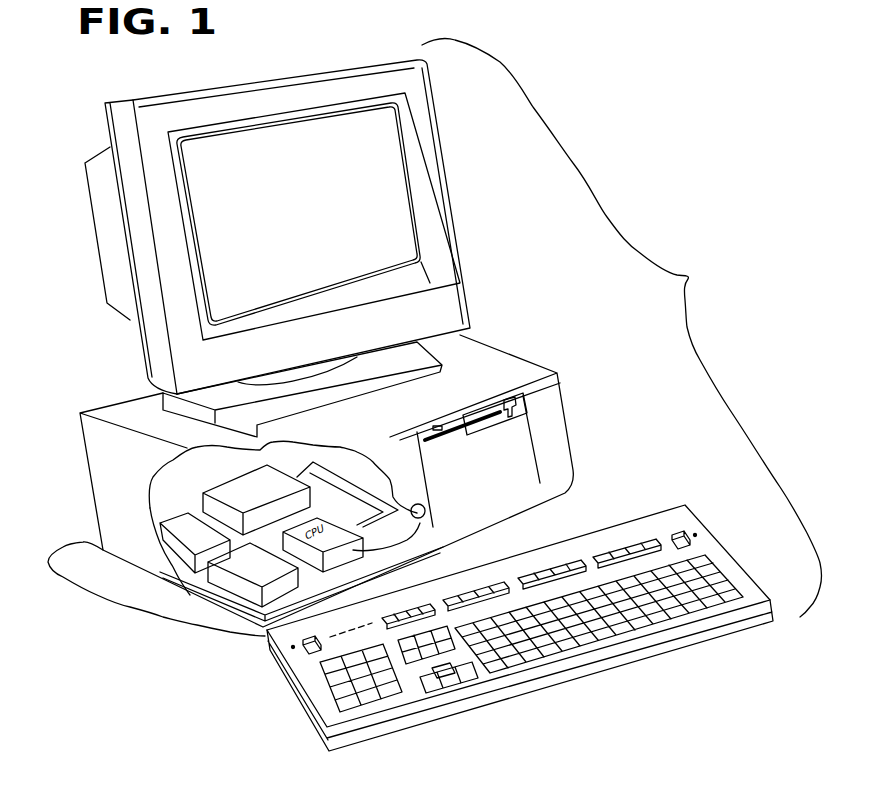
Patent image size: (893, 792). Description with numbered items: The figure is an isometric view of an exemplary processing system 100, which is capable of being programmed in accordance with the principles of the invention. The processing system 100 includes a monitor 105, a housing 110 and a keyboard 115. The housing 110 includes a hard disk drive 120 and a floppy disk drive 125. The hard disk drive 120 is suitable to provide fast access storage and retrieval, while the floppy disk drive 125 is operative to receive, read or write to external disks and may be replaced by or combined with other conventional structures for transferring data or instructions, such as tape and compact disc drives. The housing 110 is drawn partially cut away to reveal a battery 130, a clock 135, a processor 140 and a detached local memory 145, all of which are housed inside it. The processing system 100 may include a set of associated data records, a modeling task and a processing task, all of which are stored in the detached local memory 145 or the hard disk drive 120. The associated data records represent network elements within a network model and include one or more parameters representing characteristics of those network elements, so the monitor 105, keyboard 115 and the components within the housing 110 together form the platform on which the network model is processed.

The processing system 100 is at (435, 337).
The monitor 105 is at (140, 343).
The housing 110 is at (543, 368).
The keyboard 115 is at (682, 505).
The hard disk drive 120 is at (490, 447).
The floppy disk drive 125 is at (528, 404).
The battery 130 is at (238, 583).
The clock 135 is at (185, 557).
The processor 140 is at (426, 510).
The detached local memory 145 is at (203, 499).